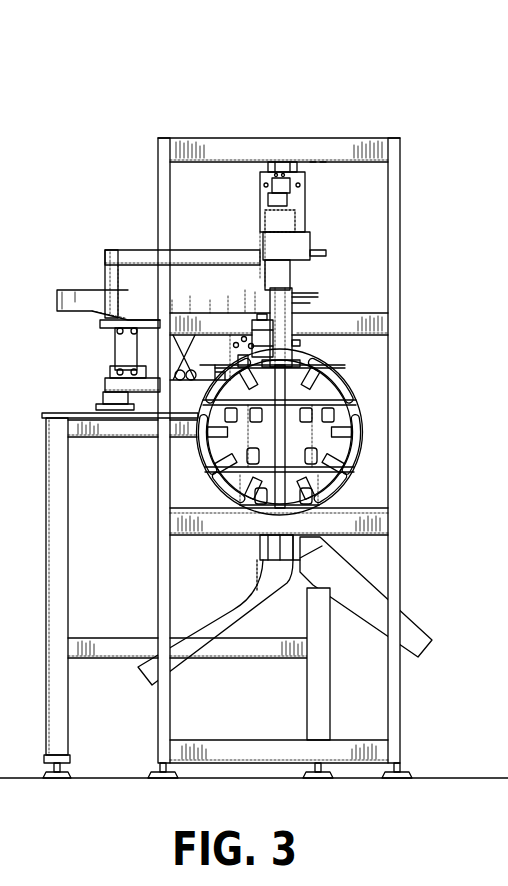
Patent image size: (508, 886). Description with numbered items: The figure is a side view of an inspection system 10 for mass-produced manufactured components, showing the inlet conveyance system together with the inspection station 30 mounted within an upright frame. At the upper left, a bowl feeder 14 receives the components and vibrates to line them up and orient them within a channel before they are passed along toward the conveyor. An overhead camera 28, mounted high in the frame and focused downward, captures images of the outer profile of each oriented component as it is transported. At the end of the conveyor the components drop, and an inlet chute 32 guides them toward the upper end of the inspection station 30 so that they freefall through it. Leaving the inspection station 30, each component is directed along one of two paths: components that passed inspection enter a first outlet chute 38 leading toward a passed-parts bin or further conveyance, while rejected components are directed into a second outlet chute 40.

The inspection system 10 is at (376, 92).
The bowl feeder 14 is at (115, 262).
The overhead camera 28 is at (272, 218).
The inspection station 30 is at (360, 385).
The inlet chute 32 is at (272, 320).
The first outlet chute 38 is at (211, 626).
The second outlet chute 40 is at (415, 630).